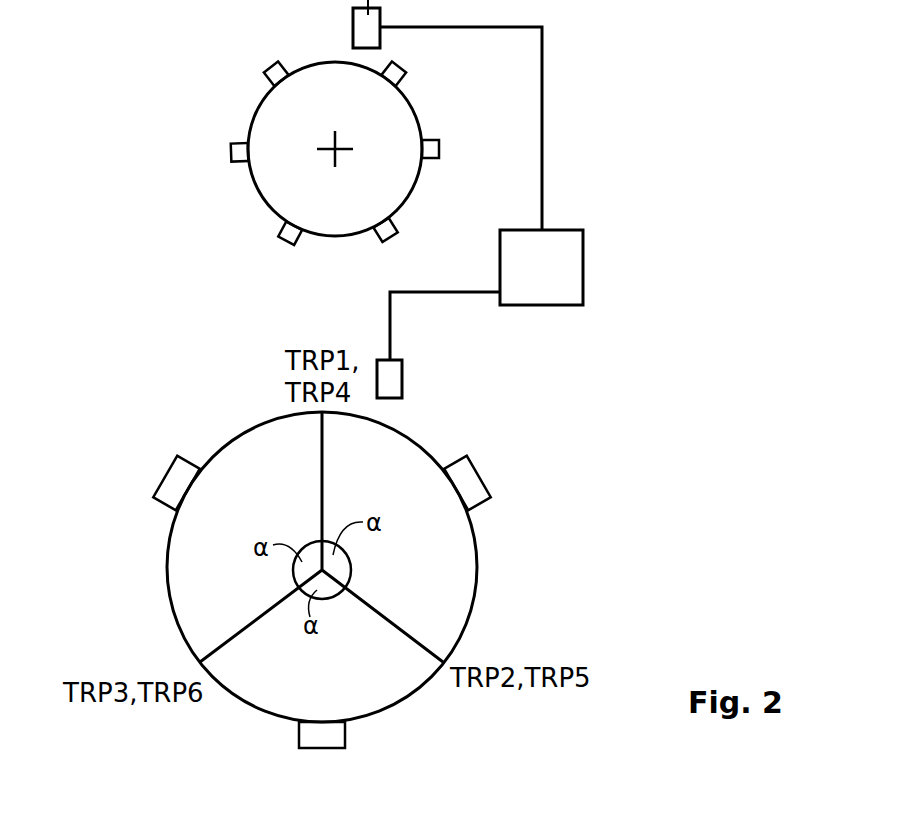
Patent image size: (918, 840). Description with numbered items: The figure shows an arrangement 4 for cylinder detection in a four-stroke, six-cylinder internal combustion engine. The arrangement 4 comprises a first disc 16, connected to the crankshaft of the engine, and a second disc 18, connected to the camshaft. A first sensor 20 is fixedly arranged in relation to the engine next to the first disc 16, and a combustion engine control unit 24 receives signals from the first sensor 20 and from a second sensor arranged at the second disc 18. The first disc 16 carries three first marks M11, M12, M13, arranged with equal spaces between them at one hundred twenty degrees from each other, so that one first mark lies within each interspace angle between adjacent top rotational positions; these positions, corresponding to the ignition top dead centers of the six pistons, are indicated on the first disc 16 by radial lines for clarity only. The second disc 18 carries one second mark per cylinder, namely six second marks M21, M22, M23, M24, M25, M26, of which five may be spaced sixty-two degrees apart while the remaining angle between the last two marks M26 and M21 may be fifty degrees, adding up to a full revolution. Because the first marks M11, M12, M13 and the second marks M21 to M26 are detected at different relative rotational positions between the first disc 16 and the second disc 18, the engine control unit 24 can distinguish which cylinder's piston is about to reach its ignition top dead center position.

The arrangement 4 is at (105, 234).
The first disc 16 is at (455, 553).
The second disc 18 is at (408, 125).
The first sensor 20 is at (391, 378).
The combustion engine control unit 24 is at (526, 283).
The first mark M11 is at (463, 480).
The first mark M12 is at (328, 737).
The first mark M13 is at (175, 477).
The second mark M21 is at (400, 68).
The second mark M22 is at (439, 154).
The second mark M23 is at (388, 231).
The second mark M24 is at (287, 240).
The second mark M25 is at (234, 155).
The second mark M26 is at (273, 68).